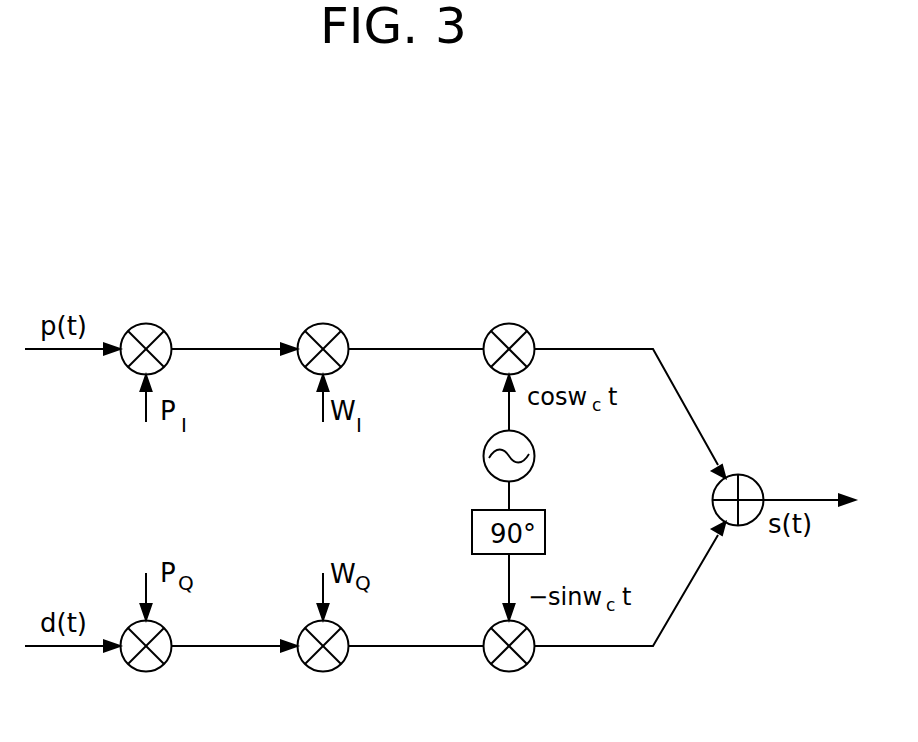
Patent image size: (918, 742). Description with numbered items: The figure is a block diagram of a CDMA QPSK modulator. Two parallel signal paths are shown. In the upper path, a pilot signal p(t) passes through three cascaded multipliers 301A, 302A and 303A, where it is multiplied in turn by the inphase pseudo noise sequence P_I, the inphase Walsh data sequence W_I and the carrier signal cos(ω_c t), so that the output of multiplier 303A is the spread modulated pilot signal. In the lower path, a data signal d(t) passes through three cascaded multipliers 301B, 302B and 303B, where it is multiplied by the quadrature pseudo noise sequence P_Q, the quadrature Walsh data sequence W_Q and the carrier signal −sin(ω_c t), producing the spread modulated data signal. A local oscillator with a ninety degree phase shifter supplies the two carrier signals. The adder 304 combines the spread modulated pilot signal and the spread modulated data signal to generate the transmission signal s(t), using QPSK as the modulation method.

The multiplier 301A is at (147, 324).
The multiplier 302A is at (324, 324).
The multiplier 303A is at (510, 324).
The multiplier 301B is at (147, 671).
The multiplier 302B is at (324, 671).
The multiplier 303B is at (510, 671).
The adder 304 is at (733, 476).